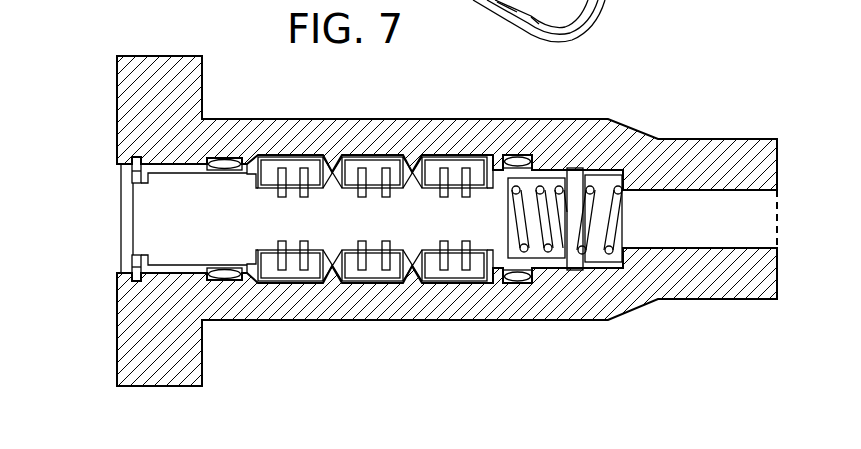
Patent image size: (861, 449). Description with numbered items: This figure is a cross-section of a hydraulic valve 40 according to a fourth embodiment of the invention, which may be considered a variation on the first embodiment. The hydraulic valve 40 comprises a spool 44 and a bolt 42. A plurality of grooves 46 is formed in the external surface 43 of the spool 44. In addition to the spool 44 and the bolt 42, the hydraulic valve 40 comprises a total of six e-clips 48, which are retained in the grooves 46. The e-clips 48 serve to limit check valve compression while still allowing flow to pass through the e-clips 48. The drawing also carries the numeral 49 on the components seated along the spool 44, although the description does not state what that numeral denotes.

The hydraulic valve 40 is at (92, 50).
The bolt 42 is at (118, 110).
The external surface 43 is at (193, 168).
The spool 44 is at (193, 275).
The grooves 46 is at (278, 197).
The e-clips 48 is at (306, 197).
The contact insert 49 is at (293, 156).